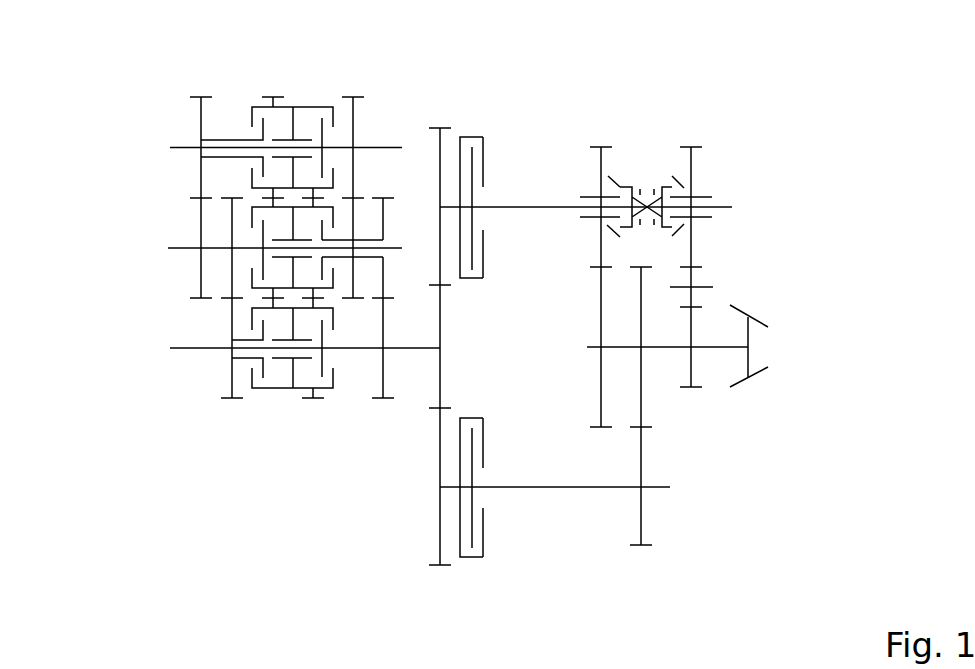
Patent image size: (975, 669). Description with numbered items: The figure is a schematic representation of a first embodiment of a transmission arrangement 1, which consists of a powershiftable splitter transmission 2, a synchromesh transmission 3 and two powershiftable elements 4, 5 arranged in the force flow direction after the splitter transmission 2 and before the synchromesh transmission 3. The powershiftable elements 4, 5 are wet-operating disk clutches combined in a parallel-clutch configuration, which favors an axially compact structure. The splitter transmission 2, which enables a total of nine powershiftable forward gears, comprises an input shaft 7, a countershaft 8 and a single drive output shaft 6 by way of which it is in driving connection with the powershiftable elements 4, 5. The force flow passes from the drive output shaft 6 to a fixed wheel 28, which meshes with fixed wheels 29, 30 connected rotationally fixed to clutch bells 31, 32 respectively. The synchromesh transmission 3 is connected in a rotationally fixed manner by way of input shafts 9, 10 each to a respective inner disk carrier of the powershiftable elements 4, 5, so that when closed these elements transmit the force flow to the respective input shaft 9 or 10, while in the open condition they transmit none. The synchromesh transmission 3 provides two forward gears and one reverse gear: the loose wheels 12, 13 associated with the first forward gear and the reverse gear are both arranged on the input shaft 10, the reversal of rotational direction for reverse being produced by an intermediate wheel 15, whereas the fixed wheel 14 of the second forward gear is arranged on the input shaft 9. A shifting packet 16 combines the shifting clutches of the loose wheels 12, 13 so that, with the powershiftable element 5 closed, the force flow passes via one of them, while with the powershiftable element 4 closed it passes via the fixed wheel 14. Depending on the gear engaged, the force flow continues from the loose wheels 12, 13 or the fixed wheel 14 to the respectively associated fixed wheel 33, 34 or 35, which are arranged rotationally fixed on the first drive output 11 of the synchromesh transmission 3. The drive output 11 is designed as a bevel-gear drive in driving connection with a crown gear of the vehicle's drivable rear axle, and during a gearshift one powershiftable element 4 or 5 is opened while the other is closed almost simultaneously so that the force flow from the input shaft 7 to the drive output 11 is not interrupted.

The transmission arrangement 1 is at (169, 95).
The powershiftable splitter transmission 2 is at (281, 411).
The synchromesh transmission 3 is at (715, 502).
The powershiftable element 4 is at (479, 567).
The powershiftable element 5 is at (470, 129).
The drive output shaft 6 is at (424, 350).
The input shaft 7 is at (180, 246).
The countershaft 8 is at (184, 147).
The input shaft 9 is at (572, 487).
The input shaft 10 is at (571, 195).
The drive output 11 is at (698, 340).
The loose wheel 12 is at (608, 159).
The loose wheel 13 is at (696, 172).
The fixed wheel 14 is at (644, 520).
The intermediate wheel 15 is at (702, 279).
The shifting packet 16 is at (651, 181).
The fixed wheel 28 is at (440, 393).
The fixed wheel 29 is at (438, 530).
The fixed wheel 30 is at (437, 163).
The clutch bell 31 is at (483, 533).
The clutch bell 32 is at (485, 158).
The fixed wheel 33 is at (598, 303).
The fixed wheel 34 is at (642, 410).
The fixed wheel 35 is at (692, 365).